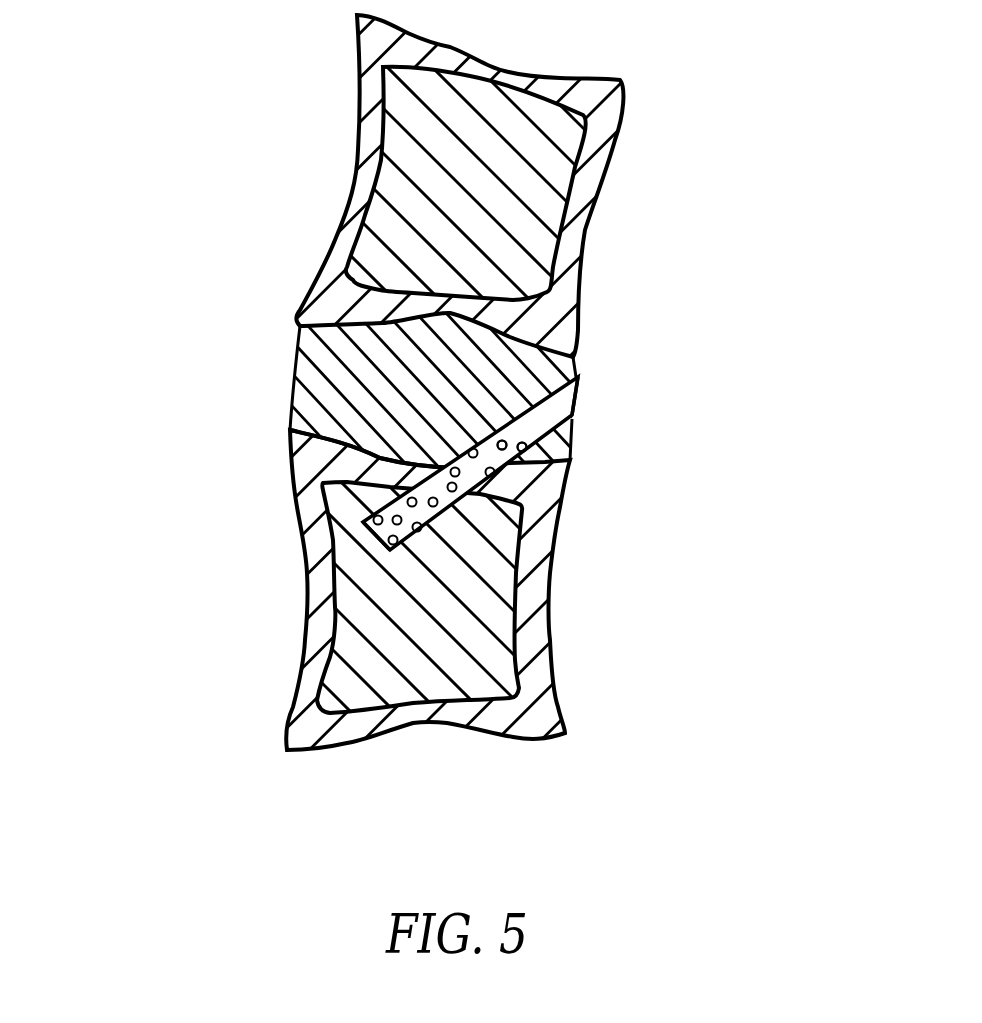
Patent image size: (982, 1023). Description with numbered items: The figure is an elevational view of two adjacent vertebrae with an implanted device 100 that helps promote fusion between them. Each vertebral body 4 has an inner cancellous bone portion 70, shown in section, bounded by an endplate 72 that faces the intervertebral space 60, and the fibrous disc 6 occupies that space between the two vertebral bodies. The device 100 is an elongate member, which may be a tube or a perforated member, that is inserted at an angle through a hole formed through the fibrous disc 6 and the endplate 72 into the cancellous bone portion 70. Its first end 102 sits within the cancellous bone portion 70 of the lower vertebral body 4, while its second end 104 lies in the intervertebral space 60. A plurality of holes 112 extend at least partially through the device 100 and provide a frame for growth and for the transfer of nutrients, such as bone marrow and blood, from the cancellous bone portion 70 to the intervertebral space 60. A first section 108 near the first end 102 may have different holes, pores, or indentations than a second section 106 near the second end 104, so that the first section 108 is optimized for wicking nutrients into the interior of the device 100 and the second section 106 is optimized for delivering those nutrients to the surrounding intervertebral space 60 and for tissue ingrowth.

The vertebral body 4 is at (655, 198).
The fibrous disc 6 is at (293, 378).
The intervertebral space 60 is at (491, 511).
The cancellous bone portion 70 is at (467, 172).
The endplate 72 is at (380, 458).
The device 100 is at (460, 481).
The first end 102 is at (372, 538).
The second end 104 is at (578, 378).
The second section 106 is at (505, 452).
The first section 108 is at (385, 512).
The holes 112 is at (460, 505).